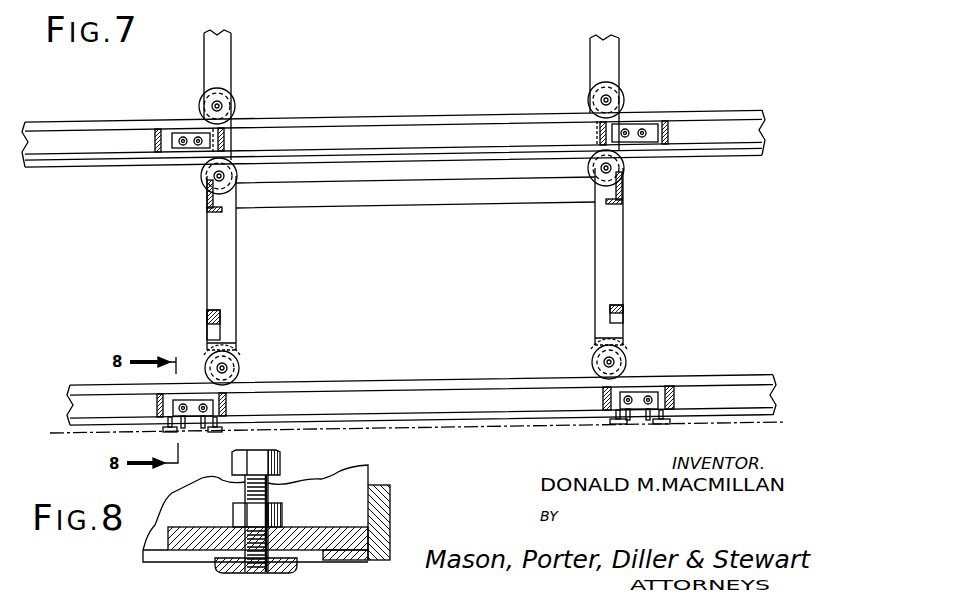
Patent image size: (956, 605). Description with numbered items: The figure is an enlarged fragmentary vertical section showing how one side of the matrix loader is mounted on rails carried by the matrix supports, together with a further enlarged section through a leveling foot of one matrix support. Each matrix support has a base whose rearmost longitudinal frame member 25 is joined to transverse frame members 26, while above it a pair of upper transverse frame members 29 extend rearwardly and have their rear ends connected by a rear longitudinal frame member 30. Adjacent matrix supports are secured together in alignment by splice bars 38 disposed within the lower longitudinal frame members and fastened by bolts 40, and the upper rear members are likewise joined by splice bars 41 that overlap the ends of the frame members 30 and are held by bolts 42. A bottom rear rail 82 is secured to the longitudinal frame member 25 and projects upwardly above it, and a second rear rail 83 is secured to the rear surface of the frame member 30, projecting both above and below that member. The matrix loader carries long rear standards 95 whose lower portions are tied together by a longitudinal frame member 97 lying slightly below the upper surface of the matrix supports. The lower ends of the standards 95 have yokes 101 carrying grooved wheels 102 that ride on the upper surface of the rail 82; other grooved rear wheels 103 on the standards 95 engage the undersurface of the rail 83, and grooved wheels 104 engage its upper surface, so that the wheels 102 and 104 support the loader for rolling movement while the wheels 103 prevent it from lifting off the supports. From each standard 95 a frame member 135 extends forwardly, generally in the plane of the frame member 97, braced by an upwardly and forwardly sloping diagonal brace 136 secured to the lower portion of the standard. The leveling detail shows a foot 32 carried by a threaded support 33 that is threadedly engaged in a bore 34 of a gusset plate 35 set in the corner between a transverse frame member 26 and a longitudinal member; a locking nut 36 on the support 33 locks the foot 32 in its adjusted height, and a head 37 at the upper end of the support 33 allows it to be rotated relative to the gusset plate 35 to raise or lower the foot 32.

In FIG. 7, the longitudinal frame member 25 is at (463, 408).
In FIG. 7, the transverse frame member 26 is at (157, 413).
In FIG. 7, the upper transverse frame member 29 is at (224, 140).
In FIG. 7, the rear longitudinal frame member 30 is at (68, 140).
In FIG. 7, the foot 32 is at (167, 429).
In FIG. 8, the foot 32 is at (218, 572).
In FIG. 8, the threaded support 33 is at (268, 493).
In FIG. 8, the bore 34 is at (265, 538).
In FIG. 8, the gusset plate 35 is at (180, 532).
In FIG. 8, the locking nut 36 is at (284, 515).
In FIG. 8, the head 37 is at (284, 465).
In FIG. 7, the splice bar 38 is at (188, 403).
In FIG. 7, the bolt 40 is at (188, 424).
In FIG. 7, the splice bar 41 is at (183, 133).
In FIG. 7, the bolt 42 is at (198, 147).
In FIG. 7, the bottom rear rail 82 is at (82, 387).
In FIG. 8, the bottom rear rail 82 is at (390, 520).
In FIG. 7, the second rear rail 83 is at (380, 118).
In FIG. 7, the rear standard 95 is at (226, 282).
In FIG. 7, the longitudinal frame member 97 is at (417, 208).
In FIG. 7, the yoke 101 is at (233, 350).
In FIG. 7, the wheel 102 is at (239, 367).
In FIG. 7, the rear wheel 103 is at (237, 176).
In FIG. 7, the grooved wheel 104 is at (236, 104).
In FIG. 7, the frame member 135 is at (207, 205).
In FIG. 7, the diagonal brace 136 is at (207, 312).